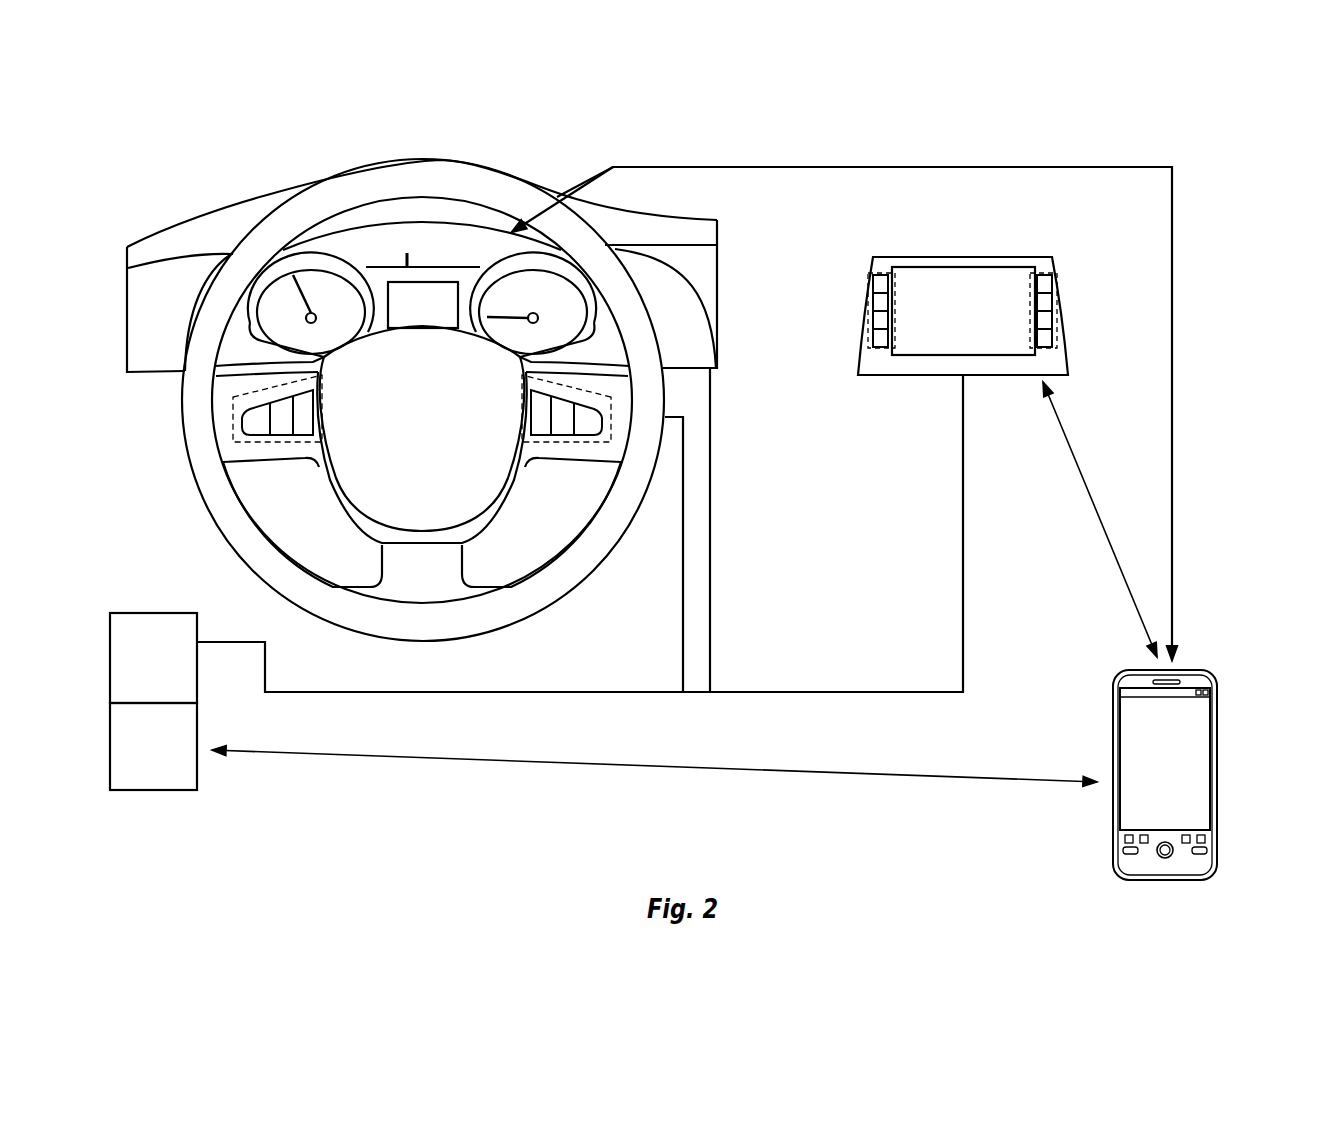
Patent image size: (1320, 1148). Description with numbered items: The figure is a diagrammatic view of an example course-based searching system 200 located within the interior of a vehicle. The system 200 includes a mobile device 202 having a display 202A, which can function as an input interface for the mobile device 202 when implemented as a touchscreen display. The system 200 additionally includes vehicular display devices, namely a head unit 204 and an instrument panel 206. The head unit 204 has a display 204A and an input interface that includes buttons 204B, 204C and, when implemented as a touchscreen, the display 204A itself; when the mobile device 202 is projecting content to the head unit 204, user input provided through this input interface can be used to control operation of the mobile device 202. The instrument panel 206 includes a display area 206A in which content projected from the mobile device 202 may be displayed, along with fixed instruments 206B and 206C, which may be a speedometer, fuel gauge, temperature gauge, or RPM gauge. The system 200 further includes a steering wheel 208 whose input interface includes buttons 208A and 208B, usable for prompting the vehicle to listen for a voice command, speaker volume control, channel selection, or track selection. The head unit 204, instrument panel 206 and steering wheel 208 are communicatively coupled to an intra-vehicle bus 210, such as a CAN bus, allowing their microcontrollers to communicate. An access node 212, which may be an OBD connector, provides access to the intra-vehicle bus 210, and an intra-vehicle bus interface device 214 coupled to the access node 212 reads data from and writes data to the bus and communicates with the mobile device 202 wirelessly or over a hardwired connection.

The course-based searching system 200 is at (1202, 152).
The mobile device 202 is at (1113, 717).
The display 202A is at (1120, 740).
The head unit 204 is at (943, 256).
The display 204A is at (972, 266).
The button 204B is at (858, 320).
The button 204C is at (1068, 320).
The instrument panel 206 is at (414, 240).
The display area 206A is at (458, 280).
The fixed instrument 206B is at (292, 270).
The fixed instrument 206C is at (597, 323).
The steering wheel 208 is at (201, 495).
The button 208A is at (233, 403).
The button 208B is at (612, 402).
The intra-vehicle bus 210 is at (824, 692).
The access node 212 is at (160, 613).
The intra-vehicle bus interface (IVBI) device 214 is at (160, 790).